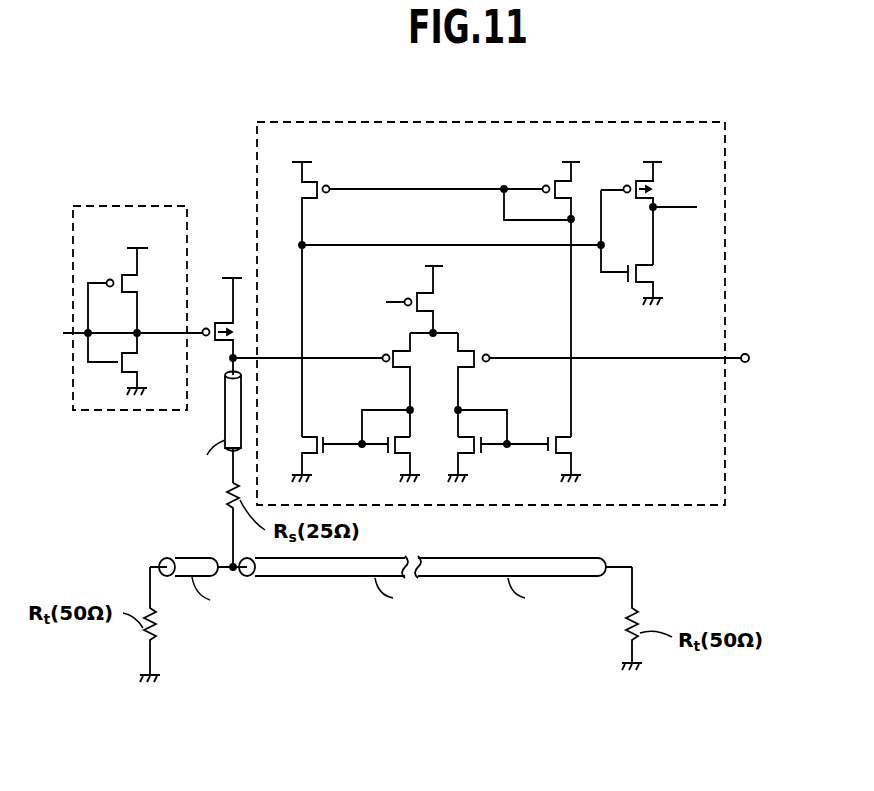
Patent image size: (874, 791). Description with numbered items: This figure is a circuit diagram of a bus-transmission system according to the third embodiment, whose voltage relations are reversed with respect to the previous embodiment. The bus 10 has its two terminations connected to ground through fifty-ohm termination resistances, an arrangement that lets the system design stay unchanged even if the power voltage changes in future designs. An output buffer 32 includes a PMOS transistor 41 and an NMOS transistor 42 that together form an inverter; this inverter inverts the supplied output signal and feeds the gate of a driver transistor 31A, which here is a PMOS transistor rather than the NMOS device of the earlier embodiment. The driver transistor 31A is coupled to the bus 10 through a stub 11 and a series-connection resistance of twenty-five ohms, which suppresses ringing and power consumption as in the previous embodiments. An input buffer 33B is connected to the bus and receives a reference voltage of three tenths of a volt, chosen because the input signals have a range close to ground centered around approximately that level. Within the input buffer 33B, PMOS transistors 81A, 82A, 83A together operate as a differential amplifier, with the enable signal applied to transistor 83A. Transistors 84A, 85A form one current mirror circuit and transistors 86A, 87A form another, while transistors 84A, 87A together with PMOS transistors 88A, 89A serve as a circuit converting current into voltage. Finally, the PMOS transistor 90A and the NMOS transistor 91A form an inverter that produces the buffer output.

The bus 10 is at (283, 578).
The stub 11 is at (225, 416).
The driver transistor 31A is at (205, 320).
The output buffer 32 is at (132, 375).
The input buffer 33B is at (607, 112).
The PMOS transistor 41 is at (138, 284).
The NMOS transistor 42 is at (137, 362).
The PMOS transistor 81A is at (391, 367).
The PMOS transistor 82A is at (477, 367).
The PMOS transistor 83A is at (437, 300).
The NMOS transistor 84A is at (318, 433).
The NMOS transistor 85A is at (387, 455).
The NMOS transistor 86A is at (470, 457).
The NMOS transistor 87A is at (575, 444).
The PMOS transistor 88A is at (318, 170).
The PMOS transistor 89A is at (548, 170).
The PMOS transistor 90A is at (662, 193).
The NMOS transistor 91A is at (660, 273).